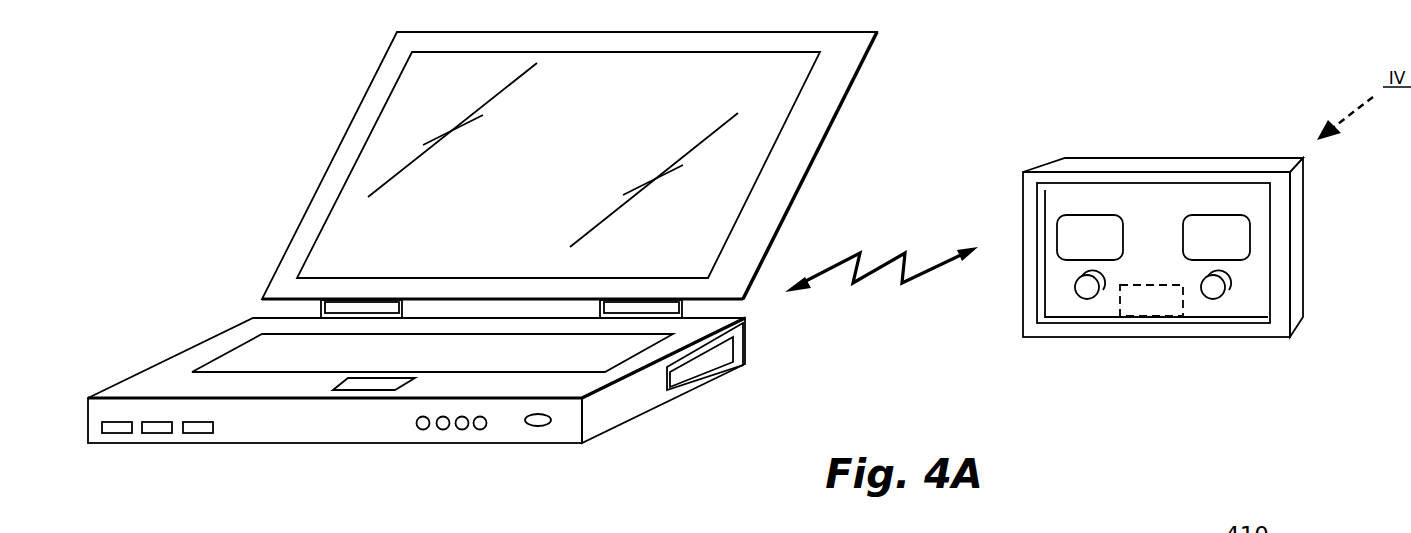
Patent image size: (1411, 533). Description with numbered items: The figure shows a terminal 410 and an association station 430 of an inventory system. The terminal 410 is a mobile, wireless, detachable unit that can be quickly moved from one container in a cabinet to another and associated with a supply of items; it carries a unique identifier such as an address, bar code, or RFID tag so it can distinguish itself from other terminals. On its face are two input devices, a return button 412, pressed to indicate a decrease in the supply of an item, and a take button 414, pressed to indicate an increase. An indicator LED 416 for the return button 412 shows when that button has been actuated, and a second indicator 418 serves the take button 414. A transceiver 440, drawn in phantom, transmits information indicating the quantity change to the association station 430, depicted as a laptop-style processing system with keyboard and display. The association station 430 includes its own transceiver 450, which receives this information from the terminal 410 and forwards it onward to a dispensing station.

The terminal 410 is at (1146, 135).
The return button 412 is at (1210, 217).
The take button 414 is at (1087, 216).
The light emitting diode 416 is at (1214, 294).
The knob 418 is at (1082, 293).
The association station 430 is at (277, 175).
The transceiver 440 is at (1157, 311).
The transceiver 450 is at (698, 365).